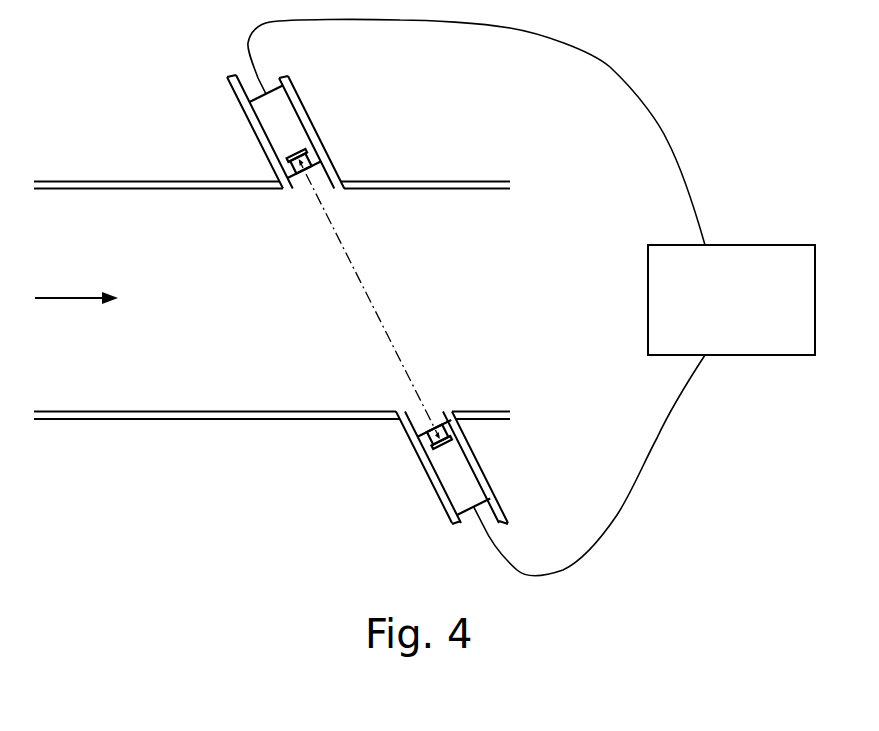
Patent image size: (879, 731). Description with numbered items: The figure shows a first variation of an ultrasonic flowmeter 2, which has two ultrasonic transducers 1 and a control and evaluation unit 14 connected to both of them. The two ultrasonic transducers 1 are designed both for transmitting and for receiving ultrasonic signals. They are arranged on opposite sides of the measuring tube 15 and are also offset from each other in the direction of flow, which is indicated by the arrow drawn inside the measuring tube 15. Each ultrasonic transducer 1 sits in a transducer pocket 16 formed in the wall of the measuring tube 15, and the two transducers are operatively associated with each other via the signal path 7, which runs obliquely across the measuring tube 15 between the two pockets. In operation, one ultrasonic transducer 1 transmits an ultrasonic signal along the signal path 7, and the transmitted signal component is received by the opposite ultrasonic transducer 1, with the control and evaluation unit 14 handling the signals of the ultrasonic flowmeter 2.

The ultrasonic transducer 1 is at (270, 125).
The ultrasonic flowmeter 2 is at (88, 76).
The signal path 7 is at (358, 285).
The control and evaluation unit 14 is at (736, 255).
The measuring tube 15 is at (112, 419).
The transducer pocket 16 is at (336, 130).